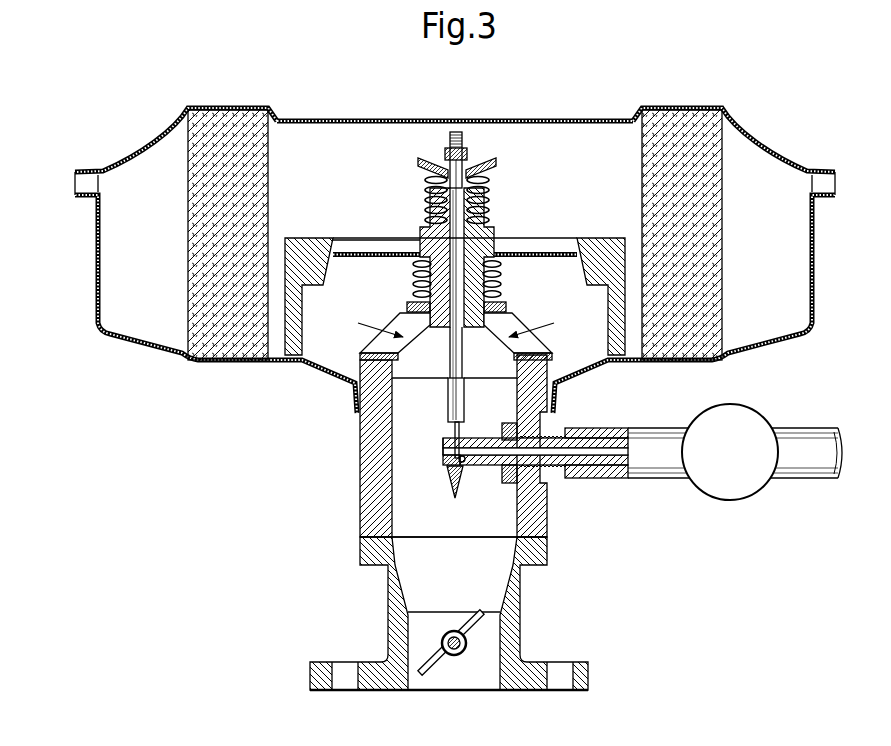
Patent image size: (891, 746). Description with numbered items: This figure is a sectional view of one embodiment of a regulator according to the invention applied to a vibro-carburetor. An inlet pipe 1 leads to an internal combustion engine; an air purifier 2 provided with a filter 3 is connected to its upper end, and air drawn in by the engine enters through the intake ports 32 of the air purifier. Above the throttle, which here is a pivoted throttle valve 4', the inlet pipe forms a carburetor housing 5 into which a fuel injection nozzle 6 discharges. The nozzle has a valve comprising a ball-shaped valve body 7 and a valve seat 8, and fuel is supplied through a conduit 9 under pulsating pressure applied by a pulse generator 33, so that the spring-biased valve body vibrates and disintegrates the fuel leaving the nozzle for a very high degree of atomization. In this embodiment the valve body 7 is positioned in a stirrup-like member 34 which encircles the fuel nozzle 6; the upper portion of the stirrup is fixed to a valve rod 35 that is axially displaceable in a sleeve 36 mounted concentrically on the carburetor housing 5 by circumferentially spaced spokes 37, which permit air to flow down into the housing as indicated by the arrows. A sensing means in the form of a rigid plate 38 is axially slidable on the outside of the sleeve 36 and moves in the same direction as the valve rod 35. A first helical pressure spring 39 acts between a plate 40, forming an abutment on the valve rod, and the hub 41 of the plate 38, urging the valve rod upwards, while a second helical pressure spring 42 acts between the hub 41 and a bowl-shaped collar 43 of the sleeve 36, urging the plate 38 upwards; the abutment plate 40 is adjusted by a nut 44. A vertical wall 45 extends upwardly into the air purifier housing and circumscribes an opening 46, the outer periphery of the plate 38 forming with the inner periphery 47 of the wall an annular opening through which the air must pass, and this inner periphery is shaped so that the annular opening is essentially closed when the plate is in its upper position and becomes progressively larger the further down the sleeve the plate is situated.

The inlet pipe 1 is at (396, 600).
The air purifier 2 is at (97, 270).
The filter 3 is at (232, 352).
The pivoted throttle valve 4' is at (487, 642).
The carburetor housing 5 is at (372, 443).
The fuel injection nozzle 6 is at (445, 440).
The valve body 7 is at (451, 464).
The valve seat 8 is at (465, 462).
The conduit 9 is at (554, 437).
The intake ports 32 is at (78, 186).
The pulse generator 33 is at (716, 467).
The stirrup-like member 34 is at (449, 488).
The valve rod 35 is at (463, 380).
The sleeve 36 is at (489, 226).
The spokes 37 is at (358, 348).
The rigid plate 38 is at (537, 238).
The first helical pressure spring 39 is at (490, 178).
The plate 40 is at (420, 163).
The hub 41 is at (429, 226).
The second helical pressure spring 42 is at (494, 280).
The bowl-shaped collar 43 is at (506, 307).
The nut 44 is at (447, 151).
The vertical wall 45 is at (305, 238).
The opening 46 is at (357, 238).
The inner periphery 47 is at (328, 260).